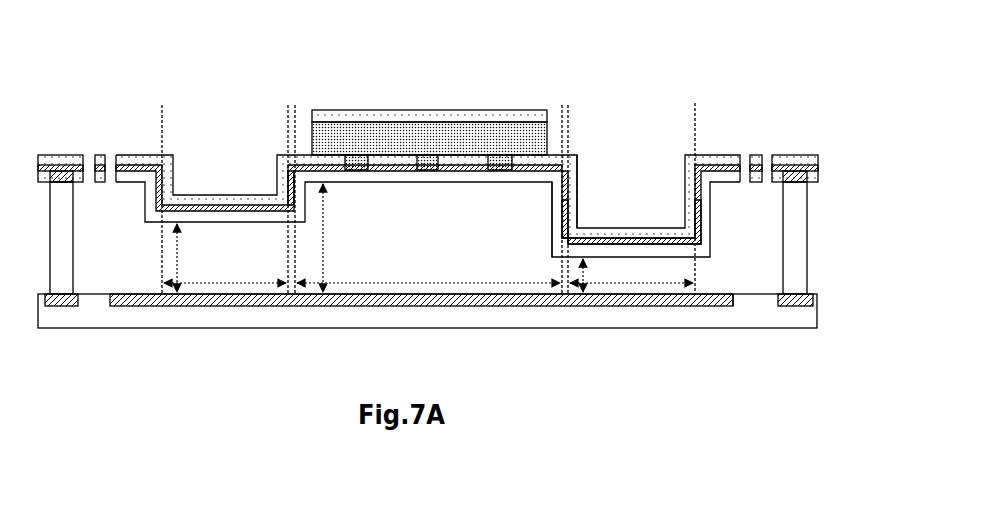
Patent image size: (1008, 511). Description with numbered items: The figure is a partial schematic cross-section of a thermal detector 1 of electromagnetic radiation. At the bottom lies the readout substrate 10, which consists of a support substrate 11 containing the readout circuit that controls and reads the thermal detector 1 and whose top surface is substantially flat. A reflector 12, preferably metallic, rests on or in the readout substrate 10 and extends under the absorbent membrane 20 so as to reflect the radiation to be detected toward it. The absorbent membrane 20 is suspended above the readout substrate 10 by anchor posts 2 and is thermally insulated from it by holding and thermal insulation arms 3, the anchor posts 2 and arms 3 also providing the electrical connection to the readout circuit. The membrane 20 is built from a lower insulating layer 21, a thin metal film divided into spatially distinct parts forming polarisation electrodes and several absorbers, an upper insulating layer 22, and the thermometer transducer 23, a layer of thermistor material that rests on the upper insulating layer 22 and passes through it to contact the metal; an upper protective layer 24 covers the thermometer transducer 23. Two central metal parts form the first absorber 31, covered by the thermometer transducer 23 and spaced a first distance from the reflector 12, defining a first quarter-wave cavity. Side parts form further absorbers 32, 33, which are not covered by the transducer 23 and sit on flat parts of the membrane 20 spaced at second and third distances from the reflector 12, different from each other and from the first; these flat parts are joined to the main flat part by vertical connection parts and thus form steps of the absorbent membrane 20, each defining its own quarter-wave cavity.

The thermal detector 1 is at (92, 126).
The anchor posts 2 is at (808, 237).
The holding and thermal insulation arms 3 is at (758, 151).
The readout substrate 10 is at (820, 300).
The support substrate 11 is at (820, 313).
The reflector 12 is at (738, 302).
The absorbent membrane 20 is at (428, 160).
The lower insulating layer 21 is at (820, 178).
The upper insulating layer 22 is at (581, 165).
The thermometer transducer 23 is at (475, 119).
The upper protective layer 24 is at (550, 116).
The first absorber 31 is at (462, 161).
The absorber 32 is at (218, 202).
The absorber 33 is at (648, 235).